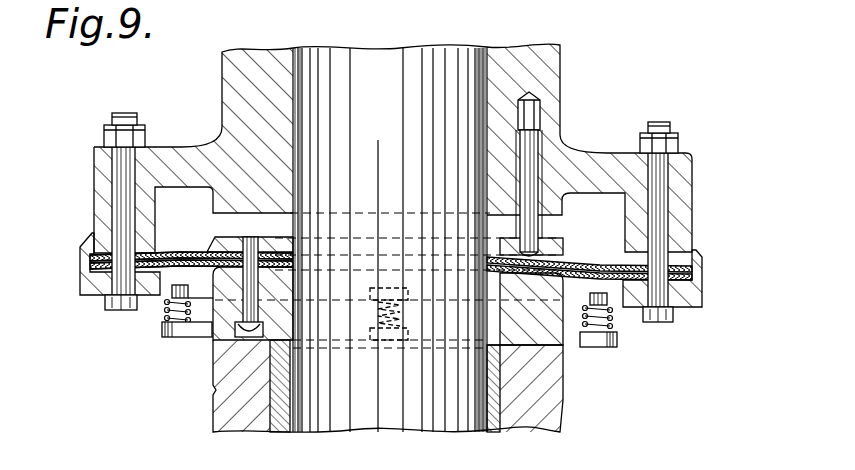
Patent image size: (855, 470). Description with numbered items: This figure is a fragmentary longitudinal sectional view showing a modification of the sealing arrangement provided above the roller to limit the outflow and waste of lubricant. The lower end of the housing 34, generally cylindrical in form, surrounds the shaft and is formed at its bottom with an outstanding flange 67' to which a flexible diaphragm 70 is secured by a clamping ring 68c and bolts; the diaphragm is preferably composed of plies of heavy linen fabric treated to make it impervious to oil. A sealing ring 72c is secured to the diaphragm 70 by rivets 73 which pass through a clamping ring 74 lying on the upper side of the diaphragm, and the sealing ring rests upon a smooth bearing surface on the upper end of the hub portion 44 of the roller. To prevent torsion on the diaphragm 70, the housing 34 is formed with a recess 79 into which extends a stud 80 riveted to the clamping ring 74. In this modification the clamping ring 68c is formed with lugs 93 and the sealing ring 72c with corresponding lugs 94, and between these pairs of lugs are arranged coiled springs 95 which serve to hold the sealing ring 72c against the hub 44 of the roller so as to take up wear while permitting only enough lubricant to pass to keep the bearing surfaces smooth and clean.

The housing 34 is at (560, 53).
The outstanding flange 67' is at (146, 168).
The recess 79 is at (533, 112).
The stud 80 is at (537, 143).
The clamping ring 74 is at (553, 235).
The lug 93 is at (173, 297).
The clamping ring 68c is at (92, 289).
The coiled spring 95 is at (165, 316).
The lug 94 is at (175, 334).
The sealing ring 72c is at (545, 336).
The flexible diaphragm 70 is at (200, 252).
The rivet 73 is at (252, 260).
The hub portion 44 is at (250, 388).